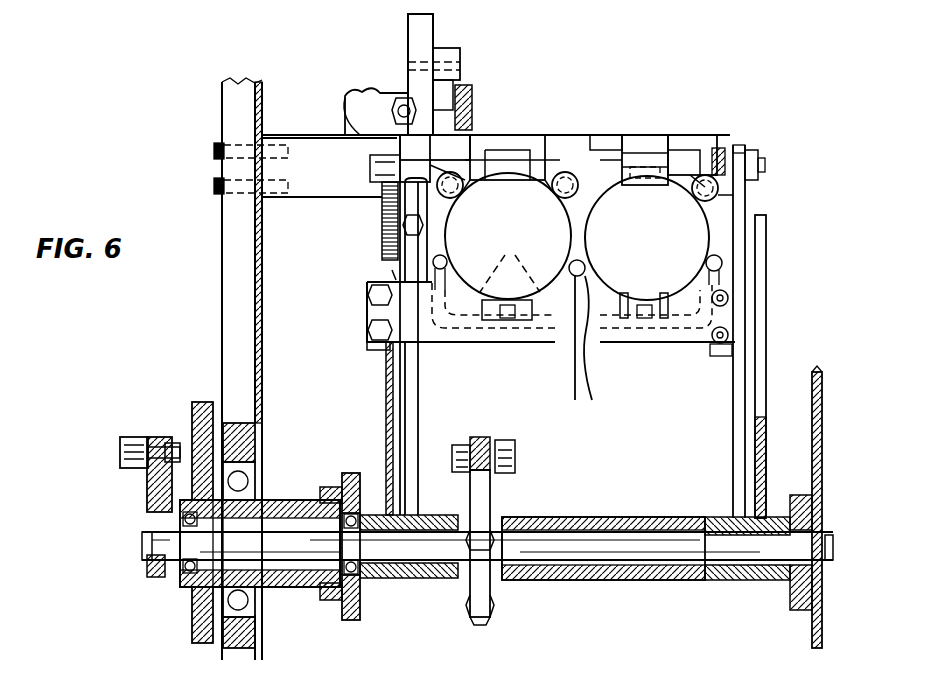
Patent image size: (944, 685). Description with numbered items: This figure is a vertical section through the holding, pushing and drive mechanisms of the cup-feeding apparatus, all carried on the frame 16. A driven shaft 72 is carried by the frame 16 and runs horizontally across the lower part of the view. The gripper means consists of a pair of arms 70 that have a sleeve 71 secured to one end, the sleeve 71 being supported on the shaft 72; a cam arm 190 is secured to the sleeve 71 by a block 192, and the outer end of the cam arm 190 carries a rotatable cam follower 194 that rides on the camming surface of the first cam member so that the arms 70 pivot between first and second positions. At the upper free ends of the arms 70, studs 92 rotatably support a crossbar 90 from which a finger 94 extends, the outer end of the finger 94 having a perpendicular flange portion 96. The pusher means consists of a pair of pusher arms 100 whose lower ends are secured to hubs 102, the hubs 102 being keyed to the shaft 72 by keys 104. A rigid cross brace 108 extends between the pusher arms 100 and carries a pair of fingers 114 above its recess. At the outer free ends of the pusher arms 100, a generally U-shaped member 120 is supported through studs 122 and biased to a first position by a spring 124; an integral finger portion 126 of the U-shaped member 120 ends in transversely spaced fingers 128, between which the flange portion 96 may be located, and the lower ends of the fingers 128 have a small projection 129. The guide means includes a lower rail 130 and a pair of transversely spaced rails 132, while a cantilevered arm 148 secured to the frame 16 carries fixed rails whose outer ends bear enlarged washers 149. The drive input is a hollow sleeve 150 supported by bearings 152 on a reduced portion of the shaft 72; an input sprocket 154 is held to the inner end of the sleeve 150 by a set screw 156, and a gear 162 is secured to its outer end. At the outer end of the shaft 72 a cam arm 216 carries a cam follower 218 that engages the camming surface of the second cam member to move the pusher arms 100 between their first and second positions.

The frame 16 is at (232, 232).
The arms 70 is at (413, 455).
The sleeve 71 is at (624, 518).
The shaft 72 is at (602, 556).
The crossbar 90 is at (688, 140).
The studs 92 is at (730, 150).
The finger 94 is at (645, 165).
The flange portion 96 is at (612, 160).
The pusher arms 100 is at (388, 386).
The hubs 102 is at (395, 572).
The keys 104 is at (430, 562).
The cross brace 108 is at (405, 310).
The fingers 114 is at (577, 236).
The U-shaped member 120 is at (462, 140).
The studs 122 is at (378, 158).
The spring 124 is at (380, 222).
The finger portion 126 is at (516, 145).
The fingers 128 is at (404, 98).
The projection 129 is at (490, 195).
The lower rail 130 is at (645, 318).
The rails 132 is at (722, 262).
The cantilevered arm 148 is at (310, 152).
The washers 149 is at (722, 205).
The sleeve 150 is at (288, 508).
The bearings 152 is at (172, 520).
The input sprocket 154 is at (342, 600).
The set screw 156 is at (330, 490).
The gear 162 is at (200, 425).
The cam arm 190 is at (488, 492).
The block 192 is at (490, 585).
The cam follower 194 is at (504, 450).
The cam arm 216 is at (165, 496).
The cam follower 218 is at (128, 450).